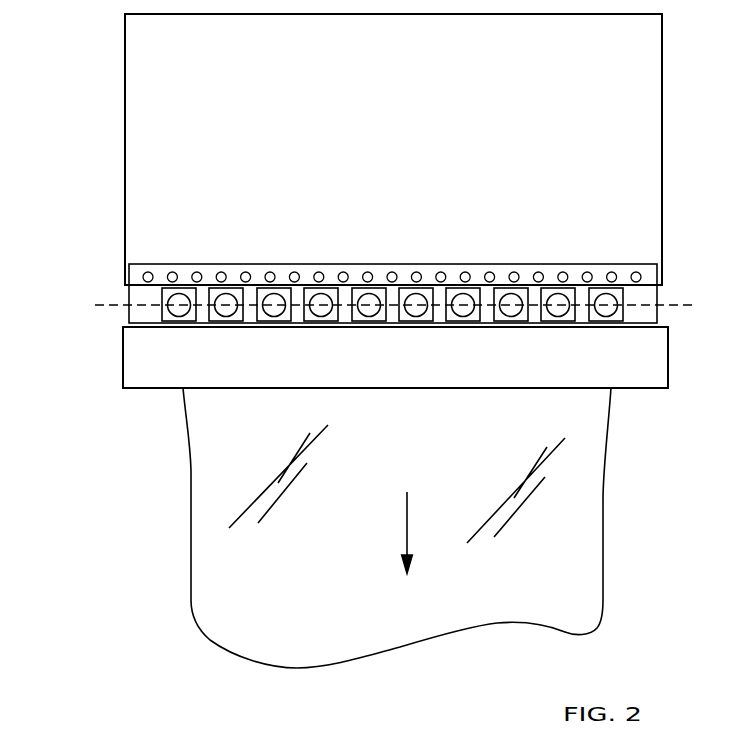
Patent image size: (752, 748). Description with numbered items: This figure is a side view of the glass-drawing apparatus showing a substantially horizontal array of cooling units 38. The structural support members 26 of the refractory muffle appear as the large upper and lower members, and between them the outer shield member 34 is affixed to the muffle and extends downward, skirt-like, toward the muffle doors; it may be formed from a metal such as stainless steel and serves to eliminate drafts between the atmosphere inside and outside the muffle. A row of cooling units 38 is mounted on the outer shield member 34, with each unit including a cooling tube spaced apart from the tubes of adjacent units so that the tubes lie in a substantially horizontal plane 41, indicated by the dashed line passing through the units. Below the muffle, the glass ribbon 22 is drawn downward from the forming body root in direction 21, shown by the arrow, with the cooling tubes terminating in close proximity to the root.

The direction 21 is at (407, 518).
The glass ribbon 22 is at (604, 496).
The structural support members 26 is at (662, 170).
The outer shield members 34 is at (657, 315).
The cooling units 38 is at (229, 288).
The substantially horizontal plane 41 is at (105, 300).